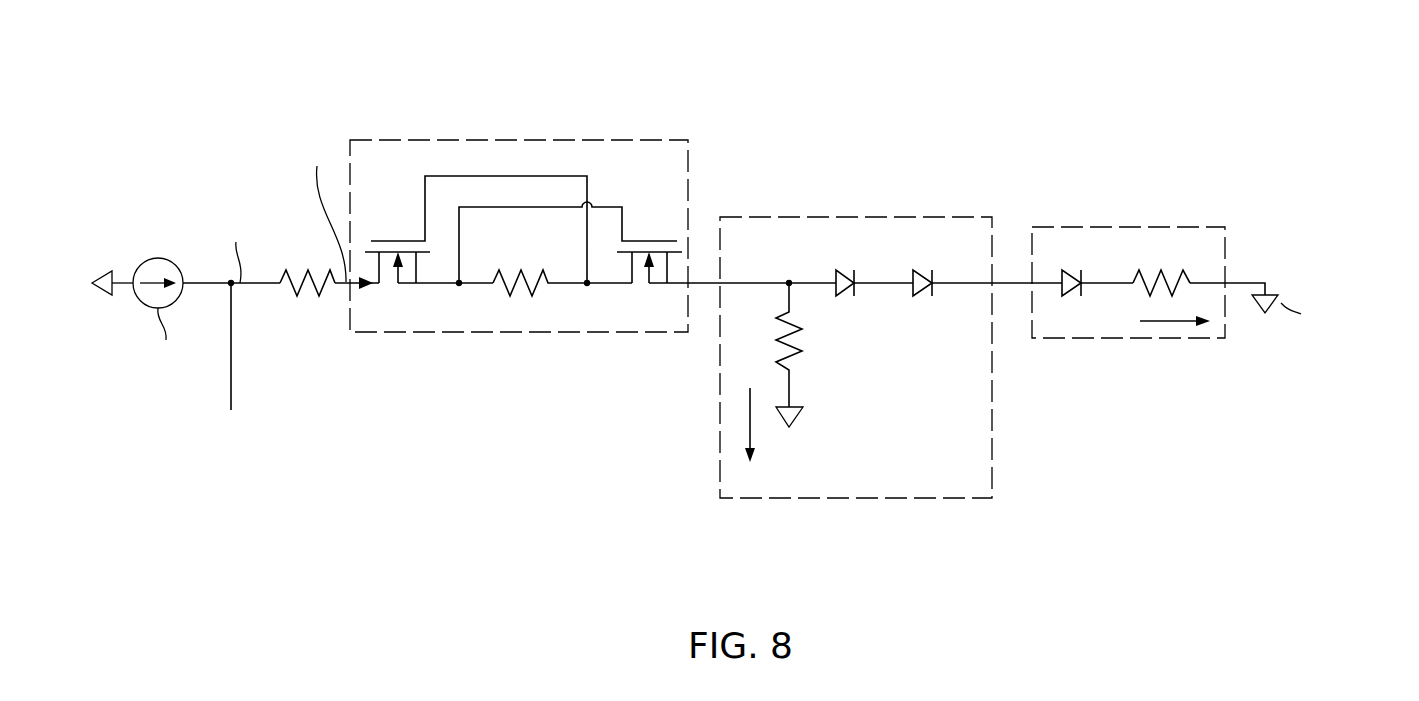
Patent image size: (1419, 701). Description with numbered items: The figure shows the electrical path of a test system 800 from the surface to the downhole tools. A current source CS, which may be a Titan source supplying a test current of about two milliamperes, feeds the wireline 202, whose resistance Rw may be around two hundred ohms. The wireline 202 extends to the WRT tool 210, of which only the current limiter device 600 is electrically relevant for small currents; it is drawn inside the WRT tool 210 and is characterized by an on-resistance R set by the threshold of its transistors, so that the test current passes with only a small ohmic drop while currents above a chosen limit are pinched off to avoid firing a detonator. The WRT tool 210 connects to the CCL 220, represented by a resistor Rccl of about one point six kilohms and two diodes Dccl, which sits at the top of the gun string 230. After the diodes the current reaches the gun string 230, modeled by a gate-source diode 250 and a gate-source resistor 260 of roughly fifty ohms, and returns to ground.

The system 800 is at (1294, 68).
The wireline 202 is at (307, 256).
The WRT tool 210 is at (596, 128).
The current limiter device 600 is at (598, 334).
The CCL 220 is at (828, 198).
The gun string 230 is at (1115, 227).
The gate-source diode Dgs 250 is at (1068, 297).
The gate-source resistor Rgs 260 is at (1181, 281).